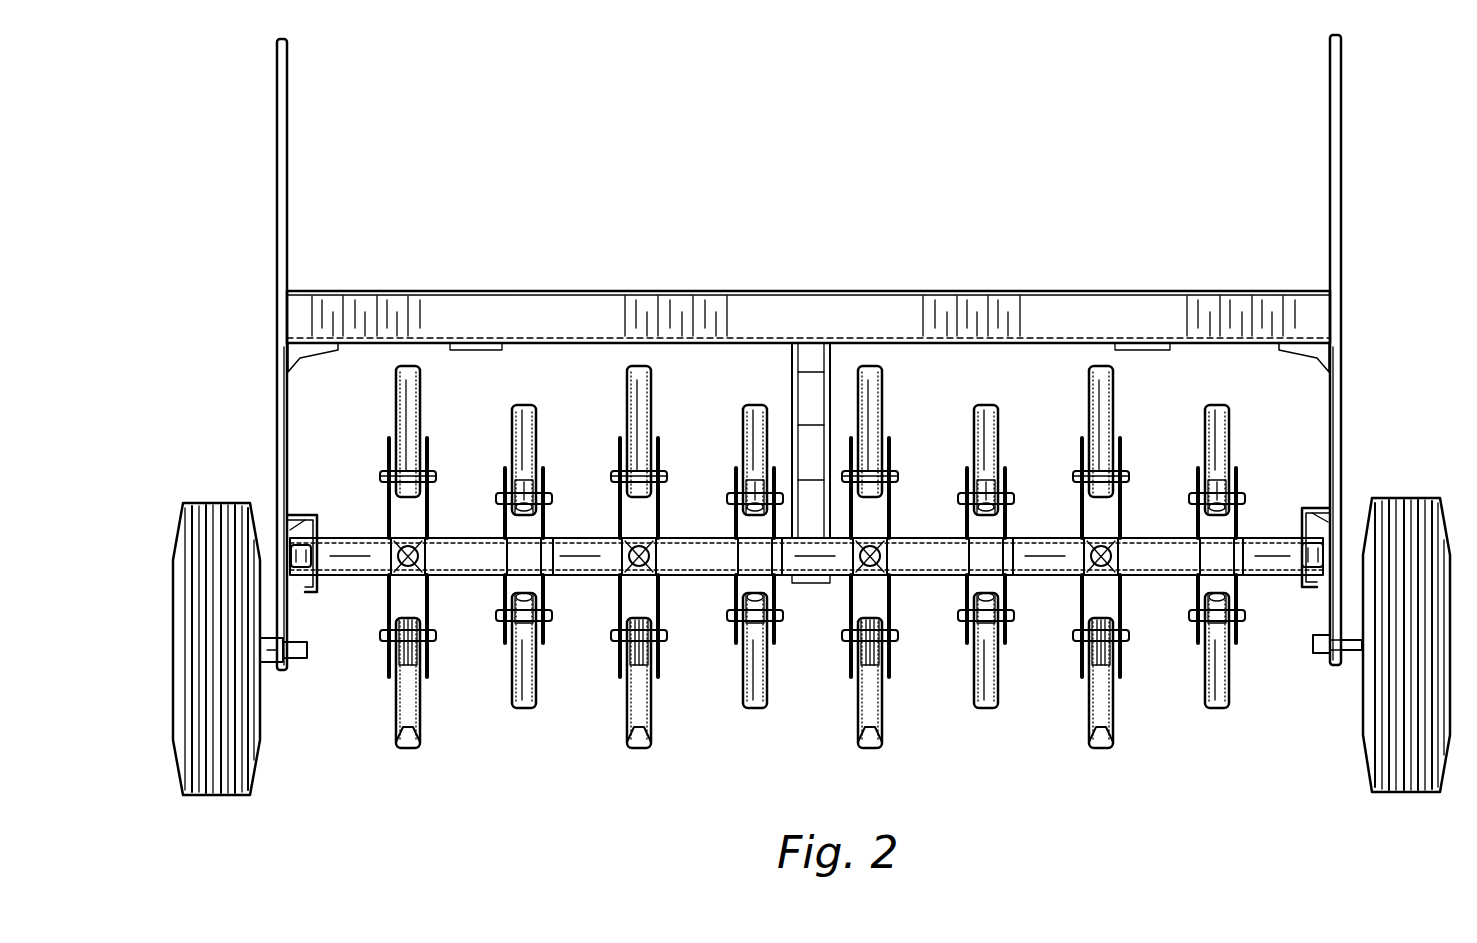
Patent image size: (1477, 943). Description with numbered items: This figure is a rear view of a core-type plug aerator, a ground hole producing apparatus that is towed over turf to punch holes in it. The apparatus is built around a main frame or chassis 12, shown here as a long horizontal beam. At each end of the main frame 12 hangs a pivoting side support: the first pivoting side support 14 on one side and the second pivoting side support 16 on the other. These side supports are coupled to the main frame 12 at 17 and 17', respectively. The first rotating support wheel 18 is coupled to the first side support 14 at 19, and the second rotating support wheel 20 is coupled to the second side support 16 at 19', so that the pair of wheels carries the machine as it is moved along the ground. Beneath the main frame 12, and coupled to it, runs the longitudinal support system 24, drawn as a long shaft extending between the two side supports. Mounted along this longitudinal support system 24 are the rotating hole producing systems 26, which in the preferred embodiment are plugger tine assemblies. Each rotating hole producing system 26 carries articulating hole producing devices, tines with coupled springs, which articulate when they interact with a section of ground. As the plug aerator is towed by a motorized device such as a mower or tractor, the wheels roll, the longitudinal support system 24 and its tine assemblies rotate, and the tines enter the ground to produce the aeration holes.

The main frame 12 is at (780, 291).
The first pivoting side support 14 is at (1341, 127).
The second pivoting side support 16 is at (277, 137).
The coupling of first side support to main frame 17 is at (1316, 703).
The coupling of second side support to main frame 17' is at (314, 706).
The first rotating support wheel 18 is at (1410, 498).
The coupling of first wheel to first side support 19 is at (1369, 489).
The coupling of second wheel to second side support 19' is at (254, 493).
The second rotating support wheel 20 is at (212, 503).
The longitudinal support system 24 is at (1037, 778).
The rotating hole producing system 26 is at (467, 737).